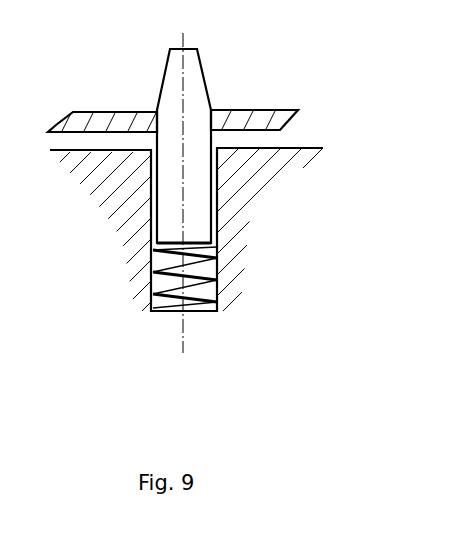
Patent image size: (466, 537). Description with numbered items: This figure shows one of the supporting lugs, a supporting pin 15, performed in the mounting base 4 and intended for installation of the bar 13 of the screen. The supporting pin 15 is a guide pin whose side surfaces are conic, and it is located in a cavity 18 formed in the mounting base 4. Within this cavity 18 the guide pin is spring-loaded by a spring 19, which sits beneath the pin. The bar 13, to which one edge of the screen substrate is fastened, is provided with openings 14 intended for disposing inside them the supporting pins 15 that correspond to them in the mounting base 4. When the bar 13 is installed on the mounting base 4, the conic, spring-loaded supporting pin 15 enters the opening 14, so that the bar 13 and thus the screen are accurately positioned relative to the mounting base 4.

The mounting base 4 is at (263, 148).
The bar 13 is at (255, 110).
The openings 14 is at (155, 110).
The supporting pin 15 is at (203, 103).
The cavity 18 is at (220, 237).
The spring 19 is at (207, 272).